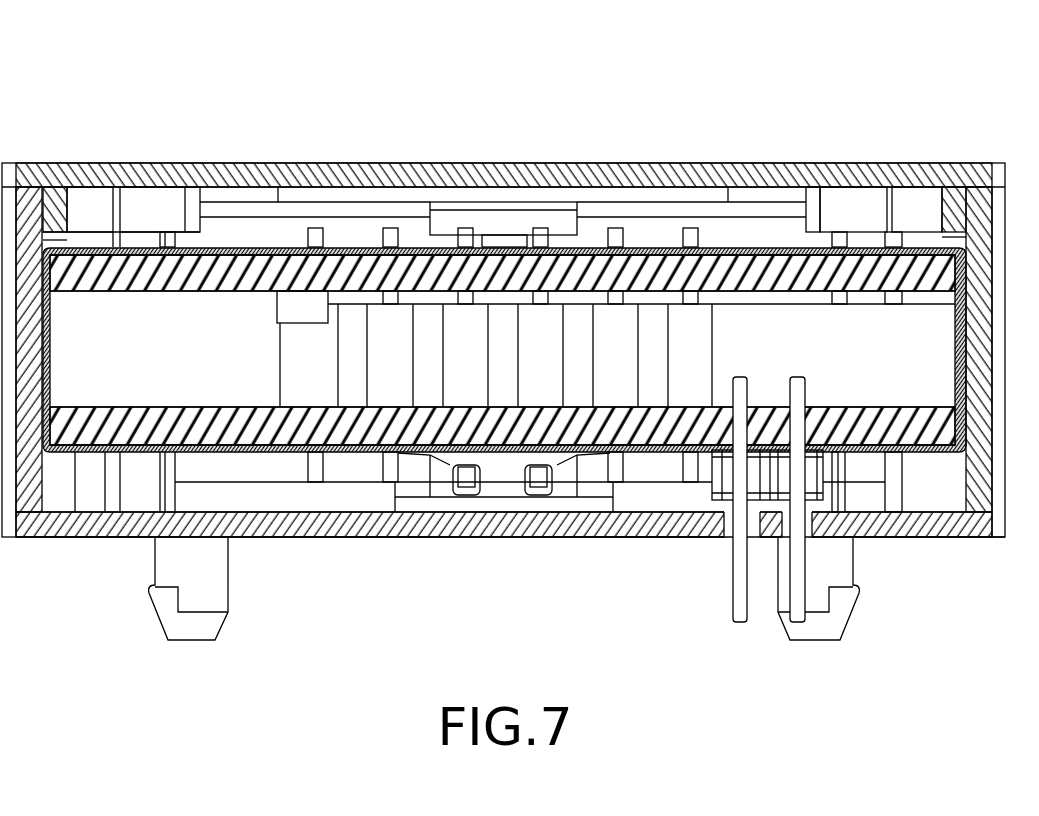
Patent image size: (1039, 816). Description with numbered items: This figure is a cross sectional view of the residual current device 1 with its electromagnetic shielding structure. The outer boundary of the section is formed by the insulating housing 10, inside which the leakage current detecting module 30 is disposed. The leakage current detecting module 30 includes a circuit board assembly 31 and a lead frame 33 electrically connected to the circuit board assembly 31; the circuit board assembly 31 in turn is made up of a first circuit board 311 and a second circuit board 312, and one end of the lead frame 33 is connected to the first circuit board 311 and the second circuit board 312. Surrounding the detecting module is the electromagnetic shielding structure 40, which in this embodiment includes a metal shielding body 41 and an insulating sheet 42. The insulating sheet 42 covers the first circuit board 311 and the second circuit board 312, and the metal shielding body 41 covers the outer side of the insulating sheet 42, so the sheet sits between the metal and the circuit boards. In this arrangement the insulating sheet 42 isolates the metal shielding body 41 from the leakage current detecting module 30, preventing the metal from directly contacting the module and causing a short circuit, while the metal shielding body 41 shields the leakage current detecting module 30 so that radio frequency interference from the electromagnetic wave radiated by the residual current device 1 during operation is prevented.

The residual current device 1 is at (511, 75).
The insulating housing 10 is at (112, 160).
The leakage current detecting module 30 is at (652, 252).
The circuit board assembly 31 is at (370, 585).
The first circuit board 311 is at (255, 432).
The second circuit board 312 is at (308, 297).
The lead frame 33 is at (613, 385).
The electromagnetic shielding structure 40 is at (860, 114).
The metal shielding body 41 is at (740, 252).
The insulating sheet 42 is at (789, 259).